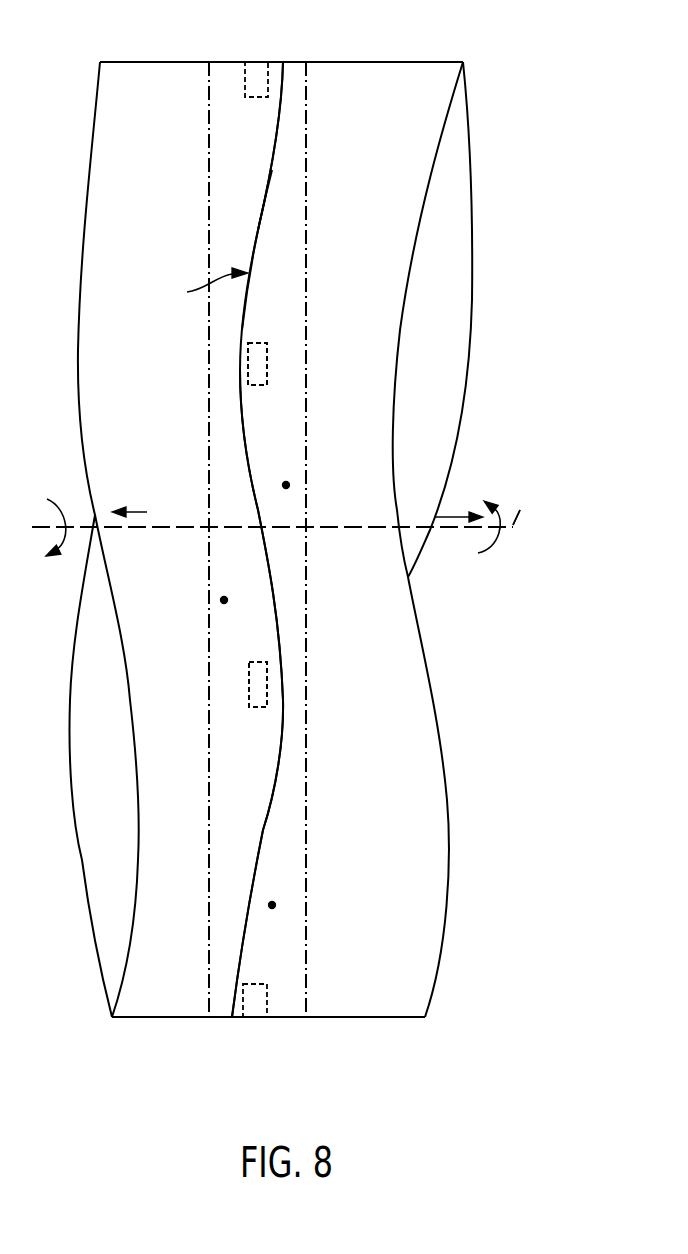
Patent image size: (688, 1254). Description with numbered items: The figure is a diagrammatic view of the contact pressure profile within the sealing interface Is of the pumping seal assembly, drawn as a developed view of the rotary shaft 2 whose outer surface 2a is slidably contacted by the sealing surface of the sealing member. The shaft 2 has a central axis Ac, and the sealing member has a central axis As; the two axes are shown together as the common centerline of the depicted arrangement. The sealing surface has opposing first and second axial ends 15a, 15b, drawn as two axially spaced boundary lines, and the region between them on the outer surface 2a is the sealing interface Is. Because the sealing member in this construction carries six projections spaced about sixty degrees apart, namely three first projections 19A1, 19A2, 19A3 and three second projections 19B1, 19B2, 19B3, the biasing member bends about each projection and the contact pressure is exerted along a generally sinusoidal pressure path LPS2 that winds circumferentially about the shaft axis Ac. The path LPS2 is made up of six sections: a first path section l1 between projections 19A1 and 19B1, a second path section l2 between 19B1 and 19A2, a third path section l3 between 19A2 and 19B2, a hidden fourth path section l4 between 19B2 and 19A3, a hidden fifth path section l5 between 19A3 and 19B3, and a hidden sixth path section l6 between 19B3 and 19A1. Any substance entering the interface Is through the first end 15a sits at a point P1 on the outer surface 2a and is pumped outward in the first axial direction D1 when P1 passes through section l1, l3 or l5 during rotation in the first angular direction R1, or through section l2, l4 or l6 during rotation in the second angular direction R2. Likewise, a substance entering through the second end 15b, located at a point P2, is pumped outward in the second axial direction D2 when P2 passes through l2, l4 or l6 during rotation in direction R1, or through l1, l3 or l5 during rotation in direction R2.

The rotary shaft 2 is at (405, 1032).
The outer surface of the shaft 2a is at (408, 62).
The first axial end of the sealing surface 15a is at (208, 80).
The second axial end of the sealing surface 15b is at (306, 105).
The first one of the three first projections 19A1 is at (256, 70).
The second one of the three first projections 19A2 is at (260, 662).
The third one of the three first projections 19A3 is at (253, 707).
The first one of the three second projections 19B1 is at (262, 363).
The second one of the three second projections 19B2 is at (256, 1005).
The third one of the three second projections 19B3 is at (268, 381).
The first path section l1 is at (268, 168).
The second path section l2 is at (253, 481).
The third path section l3 is at (268, 790).
The fourth path section l4 is at (268, 820).
The fifth path section l5 is at (268, 556).
The sixth path section l6 is at (268, 198).
The sinusoidal pressure path LPS2 is at (196, 288).
The point on the shaft outer surface proximal to the first sealing surface end P1 is at (222, 601).
The point on the shaft outer surface proximal to the second sealing surface end P2 is at (288, 484).
The sealing interface Is is at (291, 900).
The first axial direction D1 is at (129, 502).
The second axial direction D2 is at (459, 506).
The first angular direction R1 is at (67, 519).
The second angular direction R2 is at (499, 536).
The central axis of the shaft Ac is at (522, 499).
The central axis of the sealing member As is at (516, 517).